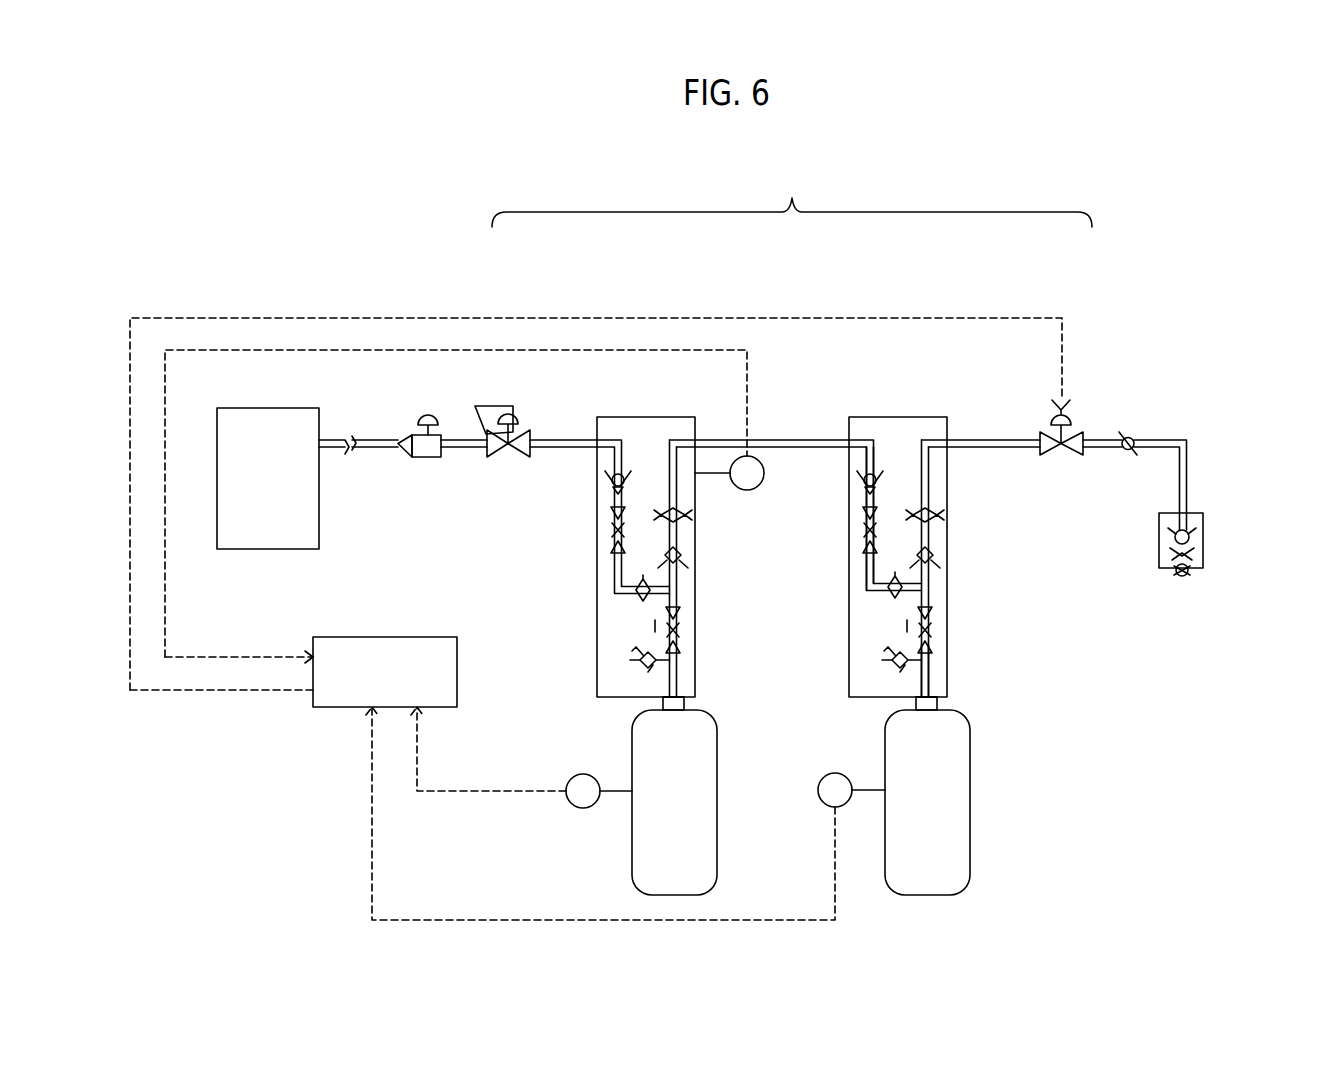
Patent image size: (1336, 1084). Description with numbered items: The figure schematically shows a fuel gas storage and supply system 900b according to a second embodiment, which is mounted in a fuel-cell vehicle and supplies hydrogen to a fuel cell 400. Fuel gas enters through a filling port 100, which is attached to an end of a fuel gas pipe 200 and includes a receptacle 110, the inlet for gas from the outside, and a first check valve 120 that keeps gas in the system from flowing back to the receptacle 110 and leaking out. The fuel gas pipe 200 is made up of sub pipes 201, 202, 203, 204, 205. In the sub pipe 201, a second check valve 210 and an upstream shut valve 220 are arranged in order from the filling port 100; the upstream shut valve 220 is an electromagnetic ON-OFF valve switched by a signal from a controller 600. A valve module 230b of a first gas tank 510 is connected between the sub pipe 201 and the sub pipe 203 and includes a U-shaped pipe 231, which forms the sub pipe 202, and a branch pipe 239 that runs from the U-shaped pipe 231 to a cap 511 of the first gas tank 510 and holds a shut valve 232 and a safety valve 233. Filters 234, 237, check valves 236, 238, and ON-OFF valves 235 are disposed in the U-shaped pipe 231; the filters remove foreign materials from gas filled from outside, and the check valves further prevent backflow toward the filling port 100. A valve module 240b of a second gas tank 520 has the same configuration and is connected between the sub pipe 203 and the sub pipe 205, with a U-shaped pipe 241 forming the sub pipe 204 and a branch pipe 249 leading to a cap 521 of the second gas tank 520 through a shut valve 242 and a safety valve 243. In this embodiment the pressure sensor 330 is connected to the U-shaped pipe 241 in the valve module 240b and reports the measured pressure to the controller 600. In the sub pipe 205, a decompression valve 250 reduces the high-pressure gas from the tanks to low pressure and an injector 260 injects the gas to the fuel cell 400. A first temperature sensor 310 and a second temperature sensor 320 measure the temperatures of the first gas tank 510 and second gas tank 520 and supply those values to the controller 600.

The fuel gas storage and supply system 900b is at (1177, 181).
The filling port 100 is at (1205, 537).
The receptacle 110 is at (1184, 578).
The first check valve 120 is at (1170, 533).
The fuel gas pipe 200 is at (705, 309).
The sub pipe 201 is at (1015, 438).
The sub pipe 202 is at (940, 417).
The sub pipe 203 is at (728, 438).
The sub pipe 204 is at (616, 417).
The sub pipe 205 is at (548, 438).
The second check valve 210 is at (1130, 428).
The upstream shut valve 220 is at (1069, 456).
The valve module 230b is at (862, 417).
The U-shaped pipe 231 is at (866, 570).
The shut valve 232 is at (905, 628).
The safety valve 233 is at (882, 662).
The filter 234 is at (886, 592).
The ON-OFF valve 235 is at (866, 524).
The check valve 236 is at (866, 476).
The filter 237 is at (940, 512).
The check valve 238 is at (940, 553).
The branch pipe 239 is at (932, 672).
The valve module 240b is at (620, 417).
The U-shaped pipe 241 is at (610, 570).
The shut valve 242 is at (653, 628).
The safety valve 243 is at (630, 662).
The branch pipe 249 is at (680, 673).
The decompression valve 250 is at (508, 412).
The injector 260 is at (428, 414).
The first temperature sensor 310 is at (830, 808).
The second temperature sensor 320 is at (572, 808).
The pressure sensor 330 is at (762, 465).
The fuel cell 400 is at (262, 408).
The first gas tank 510 is at (970, 770).
The cap 511 is at (940, 700).
The second gas tank 520 is at (717, 770).
The cap 521 is at (655, 704).
The controller 600 is at (368, 637).